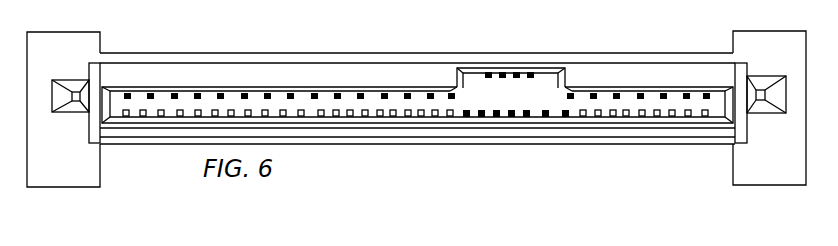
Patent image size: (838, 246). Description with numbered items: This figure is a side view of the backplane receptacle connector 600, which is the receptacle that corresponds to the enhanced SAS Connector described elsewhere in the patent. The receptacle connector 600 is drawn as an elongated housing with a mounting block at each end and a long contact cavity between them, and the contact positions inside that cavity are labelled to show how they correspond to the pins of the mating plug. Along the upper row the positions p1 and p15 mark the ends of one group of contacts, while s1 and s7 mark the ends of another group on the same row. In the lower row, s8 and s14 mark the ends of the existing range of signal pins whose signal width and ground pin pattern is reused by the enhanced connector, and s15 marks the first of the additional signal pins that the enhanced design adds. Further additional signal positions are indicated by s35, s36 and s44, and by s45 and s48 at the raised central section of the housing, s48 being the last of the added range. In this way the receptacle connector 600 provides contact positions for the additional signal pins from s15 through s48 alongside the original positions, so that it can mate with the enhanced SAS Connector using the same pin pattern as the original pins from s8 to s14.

The backplane receptacle connector 600 is at (716, 165).
The power contact p1 is at (452, 90).
The power contact p15 is at (127, 96).
The signal contact s1 is at (704, 93).
The signal contact s7 is at (570, 95).
The signal pin S8 s8 is at (563, 117).
The signal pin S14 s14 is at (465, 117).
The additional signal pin S15 s15 is at (451, 116).
The additional signal pin S35 s35 is at (127, 117).
The additional signal pin S36 s36 is at (705, 117).
The additional signal pin S44 s44 is at (584, 117).
The additional signal pin S45 s45 is at (532, 73).
The additional signal pin S48 s48 is at (483, 73).